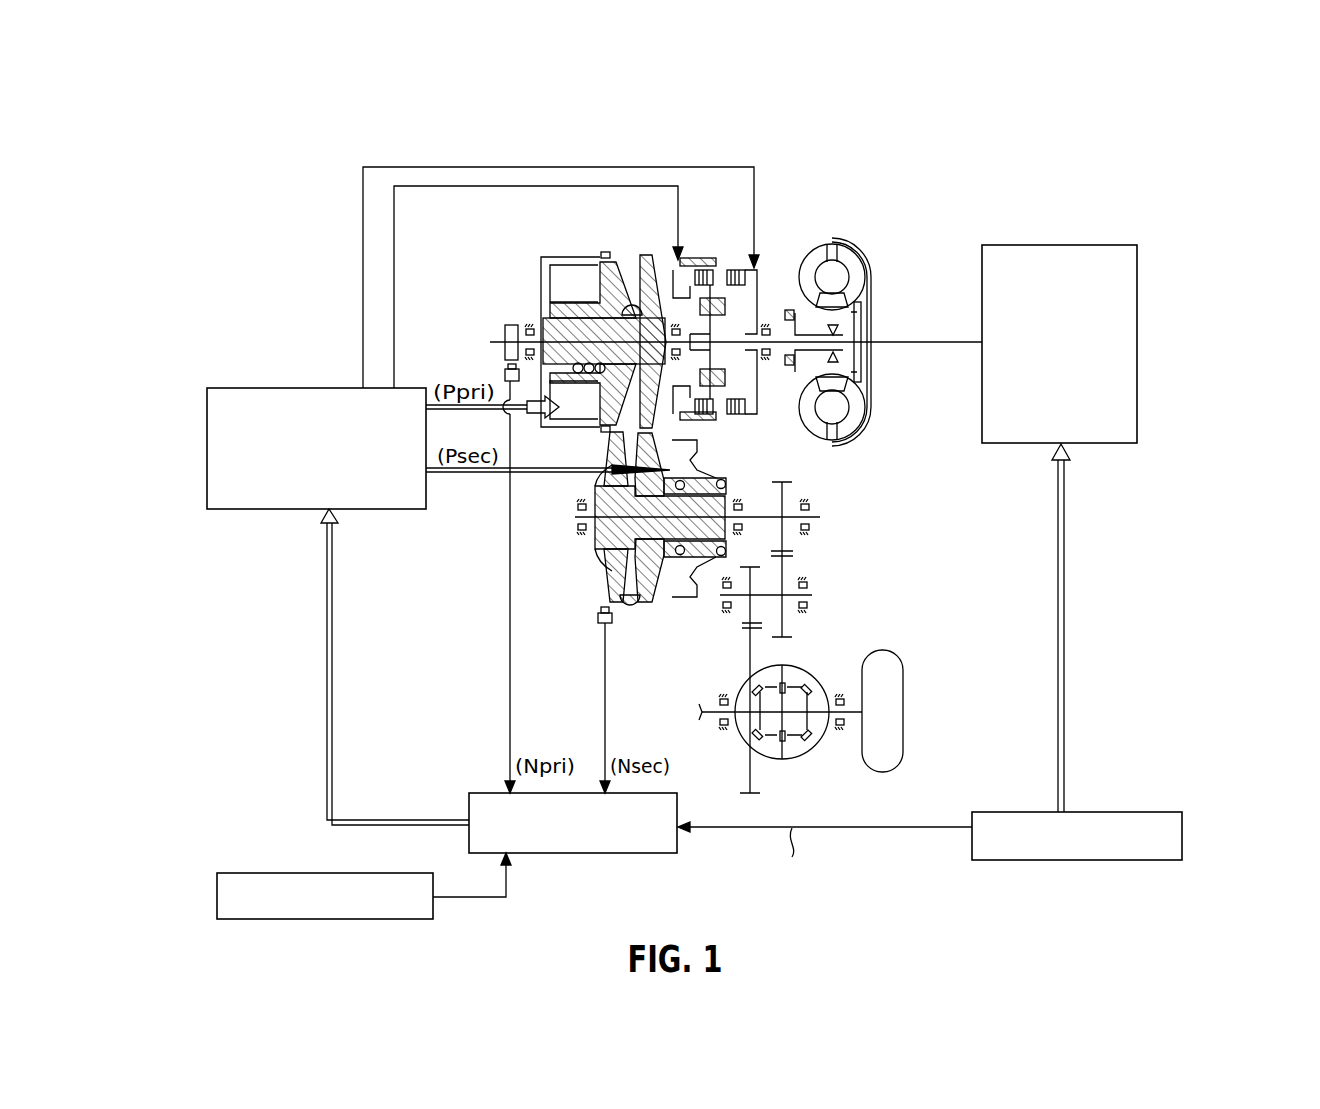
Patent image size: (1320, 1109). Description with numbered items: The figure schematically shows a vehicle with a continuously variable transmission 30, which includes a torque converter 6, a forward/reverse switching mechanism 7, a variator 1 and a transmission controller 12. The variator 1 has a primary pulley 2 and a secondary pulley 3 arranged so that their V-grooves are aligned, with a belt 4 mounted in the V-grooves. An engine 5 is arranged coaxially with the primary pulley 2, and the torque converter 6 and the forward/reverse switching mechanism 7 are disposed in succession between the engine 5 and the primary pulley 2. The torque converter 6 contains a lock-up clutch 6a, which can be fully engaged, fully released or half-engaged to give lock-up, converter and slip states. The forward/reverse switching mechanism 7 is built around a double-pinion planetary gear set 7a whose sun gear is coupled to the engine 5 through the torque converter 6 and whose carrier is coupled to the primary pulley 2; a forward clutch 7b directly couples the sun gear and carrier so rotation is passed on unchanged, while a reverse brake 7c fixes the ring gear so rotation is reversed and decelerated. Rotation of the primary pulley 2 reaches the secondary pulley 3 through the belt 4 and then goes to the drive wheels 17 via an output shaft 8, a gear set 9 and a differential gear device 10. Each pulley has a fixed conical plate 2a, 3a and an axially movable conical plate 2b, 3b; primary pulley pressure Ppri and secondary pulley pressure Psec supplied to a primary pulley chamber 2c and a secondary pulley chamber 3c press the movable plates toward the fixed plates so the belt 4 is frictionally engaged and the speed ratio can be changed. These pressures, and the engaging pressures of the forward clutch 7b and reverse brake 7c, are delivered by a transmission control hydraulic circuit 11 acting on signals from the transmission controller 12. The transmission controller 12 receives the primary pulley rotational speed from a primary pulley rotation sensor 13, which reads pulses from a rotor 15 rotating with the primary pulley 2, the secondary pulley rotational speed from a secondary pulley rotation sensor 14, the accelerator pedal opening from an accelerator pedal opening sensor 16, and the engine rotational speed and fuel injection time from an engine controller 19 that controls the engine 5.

The variator 1 is at (545, 242).
The primary pulley 2 is at (647, 248).
The fixed conical plate 2a is at (658, 255).
The movable conical plate 2b is at (606, 258).
The primary pulley chamber 2c is at (558, 284).
The secondary pulley 3 is at (695, 612).
The fixed conical plate 3a is at (610, 574).
The movable conical plate 3b is at (646, 604).
The secondary pulley chamber 3c is at (664, 592).
The belt 4 is at (634, 297).
The engine 5 is at (1063, 245).
The torque converter 6 is at (830, 232).
The lock-up clutch 6a is at (862, 326).
The forward/reverse switching mechanism 7 is at (697, 188).
The double-pinion planetary gear set 7a is at (717, 268).
The forward clutch 7b is at (734, 270).
The reverse brake 7c is at (696, 266).
The output shaft 8 is at (764, 516).
The gear set 9 is at (838, 544).
The differential gear device 10 is at (830, 662).
The transmission control hydraulic circuit 11 is at (306, 388).
The transmission controller 12 is at (469, 808).
The primary pulley rotation sensor 13 is at (505, 375).
The secondary pulley rotation sensor 14 is at (608, 625).
The rotor 15 is at (505, 332).
The accelerator pedal opening sensor 16 is at (331, 873).
The drive wheels 17 is at (890, 695).
The engine controller 19 is at (1101, 812).
The continuously variable transmission 30 is at (312, 268).